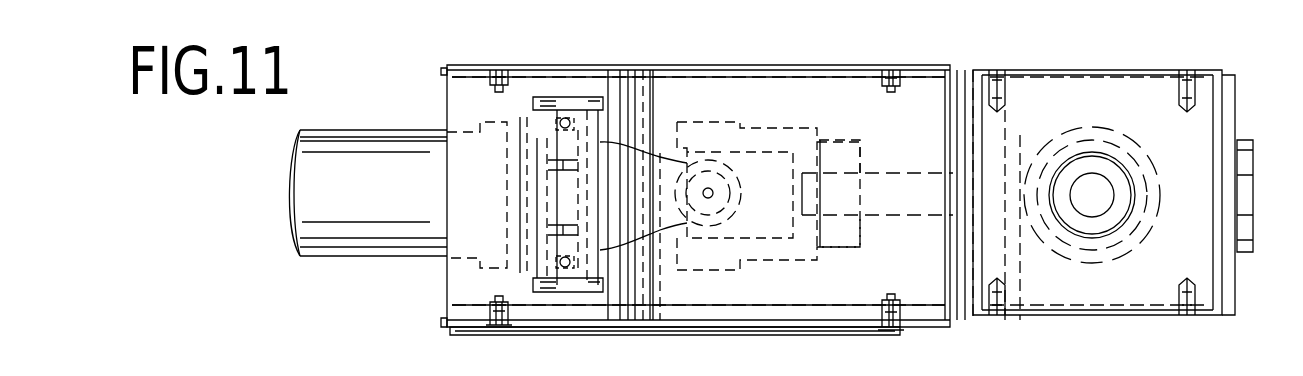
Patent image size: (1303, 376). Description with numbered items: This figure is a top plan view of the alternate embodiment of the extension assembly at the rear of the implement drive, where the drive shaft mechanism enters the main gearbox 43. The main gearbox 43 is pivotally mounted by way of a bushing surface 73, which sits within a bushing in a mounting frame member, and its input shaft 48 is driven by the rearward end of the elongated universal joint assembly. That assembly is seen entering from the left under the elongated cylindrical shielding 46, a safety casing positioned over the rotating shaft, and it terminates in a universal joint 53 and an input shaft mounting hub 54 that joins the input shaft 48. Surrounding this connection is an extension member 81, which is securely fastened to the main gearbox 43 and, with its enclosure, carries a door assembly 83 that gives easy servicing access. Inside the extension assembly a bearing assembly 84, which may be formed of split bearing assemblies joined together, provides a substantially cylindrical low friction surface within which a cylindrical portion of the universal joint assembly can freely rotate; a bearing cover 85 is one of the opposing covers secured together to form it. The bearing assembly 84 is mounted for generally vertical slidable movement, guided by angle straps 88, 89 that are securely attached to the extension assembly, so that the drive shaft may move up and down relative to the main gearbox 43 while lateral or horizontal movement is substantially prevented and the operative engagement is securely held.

The main gearbox 43 is at (1228, 92).
The cylindrical shielding 46 is at (338, 150).
The input shaft 48 is at (916, 164).
The universal joint 53 is at (703, 116).
The input shaft mounting hub 54 is at (854, 240).
The bushing surface 73 is at (1113, 216).
The extension member 81 is at (824, 88).
The door assembly 83 is at (736, 336).
The bearing assembly 84 is at (590, 128).
The bearing cover 85 is at (557, 113).
The angle strap 88 is at (565, 92).
The angle strap 89 is at (577, 296).